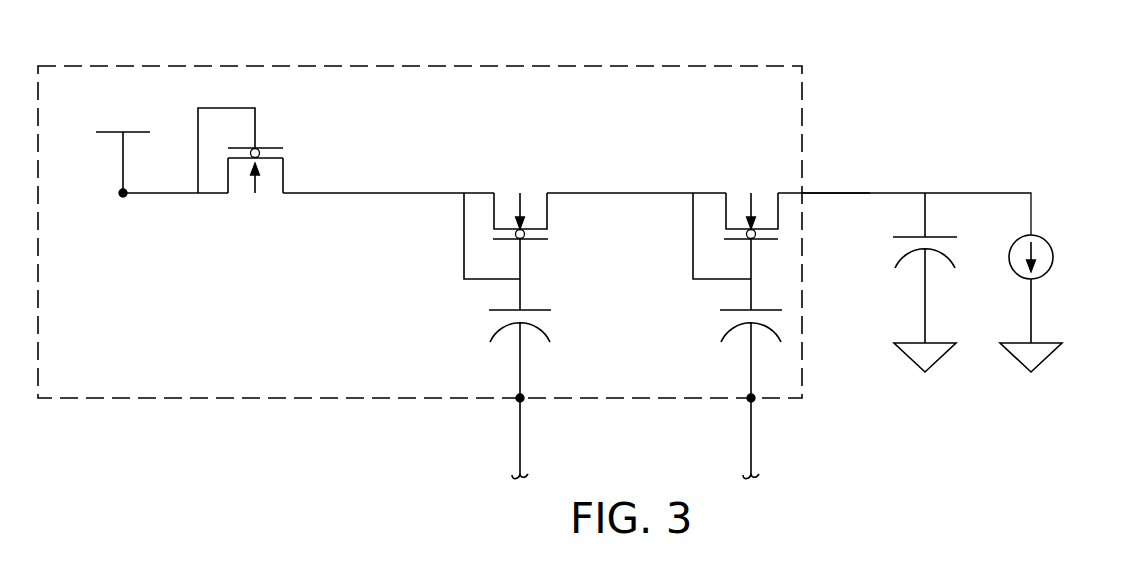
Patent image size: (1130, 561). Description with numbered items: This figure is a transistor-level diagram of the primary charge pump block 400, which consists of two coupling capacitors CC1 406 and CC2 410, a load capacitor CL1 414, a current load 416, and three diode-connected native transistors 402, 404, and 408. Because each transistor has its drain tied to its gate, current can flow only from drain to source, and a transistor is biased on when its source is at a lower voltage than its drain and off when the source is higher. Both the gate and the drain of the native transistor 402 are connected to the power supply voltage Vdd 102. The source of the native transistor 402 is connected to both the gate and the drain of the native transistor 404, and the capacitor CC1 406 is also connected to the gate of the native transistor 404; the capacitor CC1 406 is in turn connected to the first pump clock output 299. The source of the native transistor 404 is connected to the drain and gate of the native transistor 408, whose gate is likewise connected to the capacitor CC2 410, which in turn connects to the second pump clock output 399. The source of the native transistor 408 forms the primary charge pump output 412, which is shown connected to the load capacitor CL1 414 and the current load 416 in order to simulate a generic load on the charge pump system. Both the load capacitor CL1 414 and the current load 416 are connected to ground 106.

The power supply voltage Vdd 102 is at (117, 131).
The ground 106 is at (1002, 373).
The first pump clock output 299 is at (520, 437).
The second pump clock output 399 is at (751, 440).
The primary charge pump block 400 is at (95, 379).
The native transistor 402 is at (274, 127).
The native transistor 404 is at (506, 181).
The coupling capacitor CC1 406 is at (456, 316).
The native transistor 408 is at (743, 185).
The coupling capacitor CC2 410 is at (699, 314).
The primary charge pump output 412 is at (820, 193).
The load capacitor CL1 414 is at (880, 262).
The current load 416 is at (1072, 274).